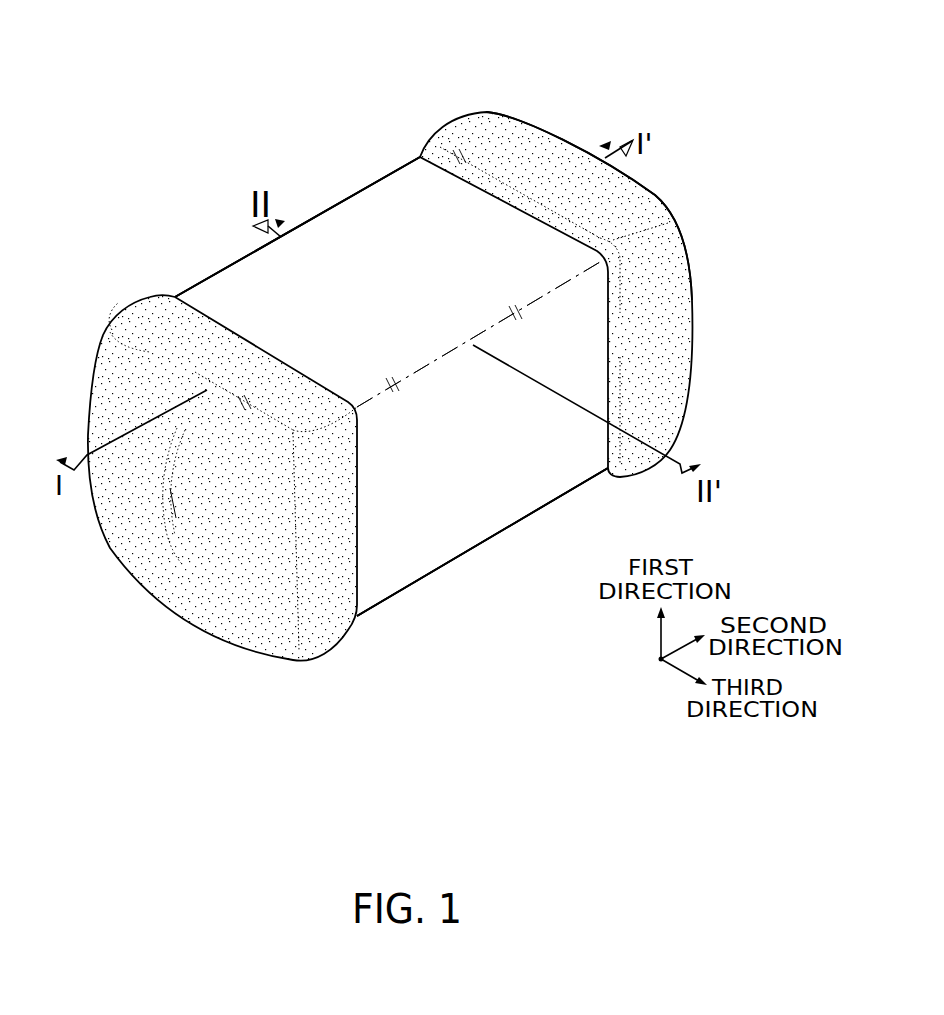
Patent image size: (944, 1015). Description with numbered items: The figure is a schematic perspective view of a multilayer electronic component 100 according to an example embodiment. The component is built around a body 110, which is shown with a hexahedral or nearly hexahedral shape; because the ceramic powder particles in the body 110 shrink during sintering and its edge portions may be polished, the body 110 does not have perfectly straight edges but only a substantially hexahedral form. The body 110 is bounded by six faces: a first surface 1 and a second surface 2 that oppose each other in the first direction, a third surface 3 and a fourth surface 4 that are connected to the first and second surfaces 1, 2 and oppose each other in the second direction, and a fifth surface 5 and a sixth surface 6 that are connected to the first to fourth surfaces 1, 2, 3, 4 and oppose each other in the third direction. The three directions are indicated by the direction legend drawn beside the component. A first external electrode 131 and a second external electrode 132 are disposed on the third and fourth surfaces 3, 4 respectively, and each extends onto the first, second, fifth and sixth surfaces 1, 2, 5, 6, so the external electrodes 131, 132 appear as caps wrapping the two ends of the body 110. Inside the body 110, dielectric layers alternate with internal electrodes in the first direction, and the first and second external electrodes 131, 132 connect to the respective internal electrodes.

The multilayer electronic component 100 is at (230, 54).
The body 110 is at (350, 213).
The first external electrode 131 is at (140, 312).
The second external electrode 132 is at (463, 118).
The first surface 1 is at (400, 192).
The second surface 2 is at (457, 560).
The third surface 3 is at (132, 537).
The fourth surface 4 is at (530, 142).
The fifth surface 5 is at (228, 266).
The sixth surface 6 is at (532, 492).